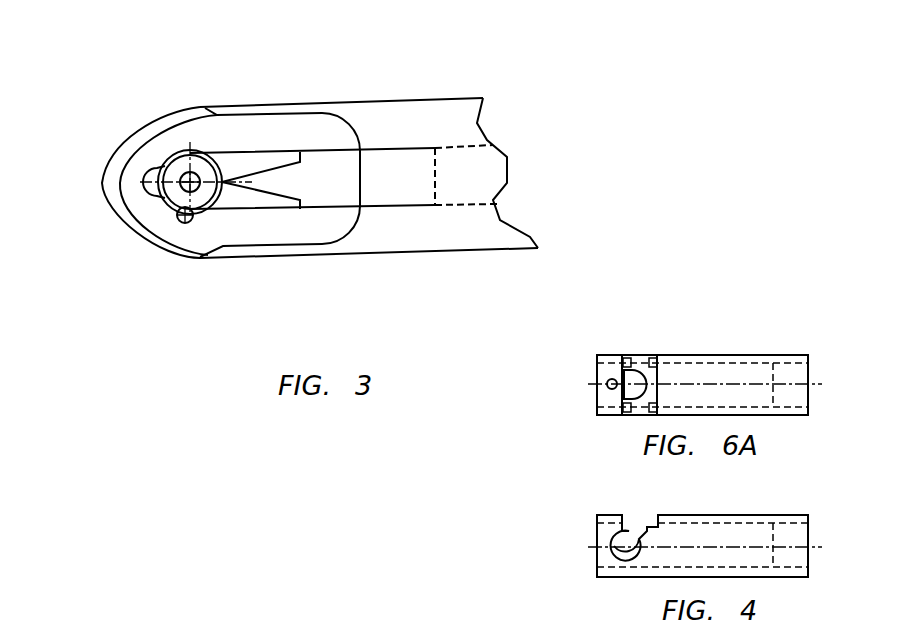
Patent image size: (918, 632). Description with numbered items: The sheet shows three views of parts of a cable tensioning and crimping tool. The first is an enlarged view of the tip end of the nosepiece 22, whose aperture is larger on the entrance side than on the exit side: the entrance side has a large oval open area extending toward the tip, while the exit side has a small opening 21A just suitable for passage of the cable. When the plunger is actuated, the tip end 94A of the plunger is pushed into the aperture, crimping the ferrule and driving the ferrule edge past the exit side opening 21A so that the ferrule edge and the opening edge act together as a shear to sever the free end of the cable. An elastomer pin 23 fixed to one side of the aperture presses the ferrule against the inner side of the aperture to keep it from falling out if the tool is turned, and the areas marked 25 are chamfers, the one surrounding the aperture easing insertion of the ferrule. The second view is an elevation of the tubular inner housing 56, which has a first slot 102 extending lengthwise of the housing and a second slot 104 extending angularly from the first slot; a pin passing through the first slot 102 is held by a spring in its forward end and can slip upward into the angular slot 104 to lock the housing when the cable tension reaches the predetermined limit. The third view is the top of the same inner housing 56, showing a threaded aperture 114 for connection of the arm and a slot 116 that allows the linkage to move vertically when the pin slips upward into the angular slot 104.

In FIG. 3, the nosepiece 22 is at (405, 100).
In FIG. 3, the exit side opening 21A is at (190, 172).
In FIG. 3, the elastomer pin 23 is at (186, 223).
In FIG. 3, the chamfers 25 is at (122, 217).
In FIG. 3, the tip end of plunger 94A is at (270, 192).
In FIG. 6A, the threaded aperture 114 is at (607, 383).
In FIG. 6A, the slot 116 is at (638, 360).
In FIG. 4, the slot 116 is at (633, 520).
In FIG. 4, the second slot 104 is at (628, 532).
In FIG. 4, the first slot 102 is at (618, 553).
In FIG. 4, the inner housing 56 is at (748, 515).